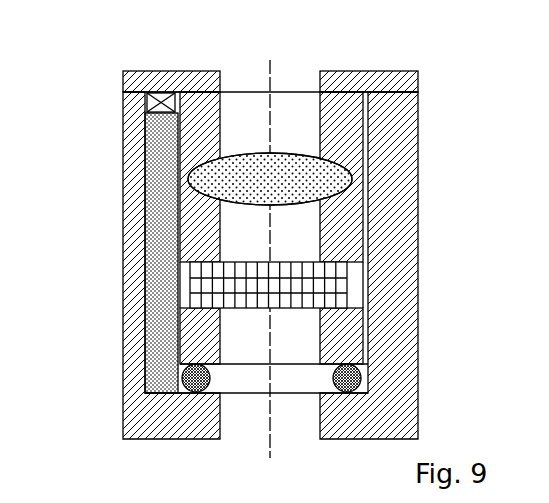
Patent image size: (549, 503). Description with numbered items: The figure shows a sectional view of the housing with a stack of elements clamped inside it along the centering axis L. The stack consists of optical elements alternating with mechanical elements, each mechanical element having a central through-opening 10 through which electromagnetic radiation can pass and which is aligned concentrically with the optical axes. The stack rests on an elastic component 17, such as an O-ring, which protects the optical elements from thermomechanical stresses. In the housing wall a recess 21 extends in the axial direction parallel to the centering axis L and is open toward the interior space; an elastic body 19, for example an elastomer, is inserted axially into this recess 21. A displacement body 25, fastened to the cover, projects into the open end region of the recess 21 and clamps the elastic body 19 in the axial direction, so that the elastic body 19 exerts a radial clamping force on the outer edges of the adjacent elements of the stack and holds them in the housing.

The centering axis L is at (272, 83).
The displacement body 25 is at (148, 97).
The recess 21 is at (140, 313).
The elastic body 19 is at (148, 232).
The elastic component 17 is at (362, 378).
The through-opening 10 is at (307, 134).